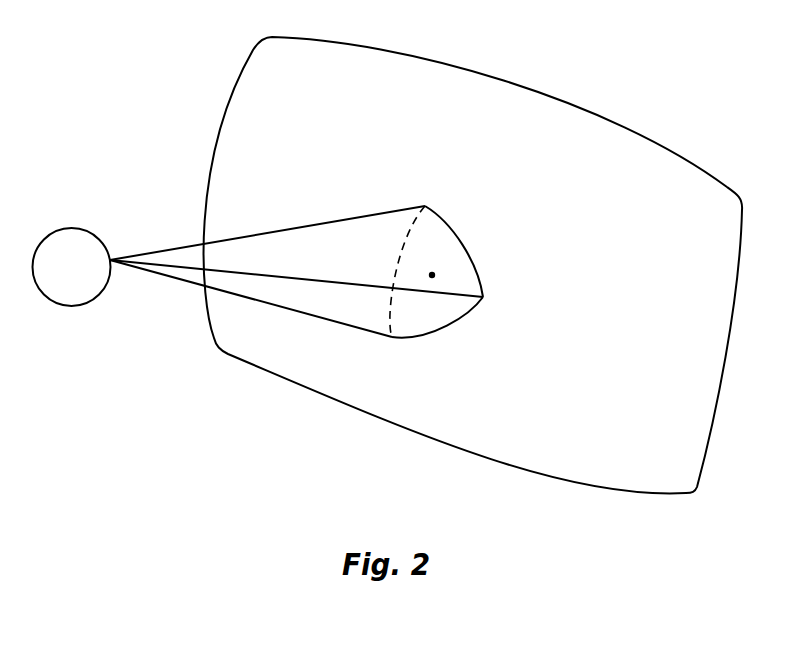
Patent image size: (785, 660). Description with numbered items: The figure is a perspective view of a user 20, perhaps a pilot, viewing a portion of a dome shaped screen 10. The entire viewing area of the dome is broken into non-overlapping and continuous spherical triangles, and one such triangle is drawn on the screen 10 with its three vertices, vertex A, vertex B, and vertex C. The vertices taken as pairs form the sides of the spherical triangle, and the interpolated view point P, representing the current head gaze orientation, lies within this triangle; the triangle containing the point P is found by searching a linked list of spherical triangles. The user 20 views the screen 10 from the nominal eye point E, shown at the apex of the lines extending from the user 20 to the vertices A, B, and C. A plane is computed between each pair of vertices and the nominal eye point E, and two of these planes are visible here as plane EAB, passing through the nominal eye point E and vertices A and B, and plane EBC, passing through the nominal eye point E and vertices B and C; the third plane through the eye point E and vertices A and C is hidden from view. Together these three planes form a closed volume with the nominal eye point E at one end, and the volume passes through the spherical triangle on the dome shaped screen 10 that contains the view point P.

The dome shaped screen 10 is at (641, 458).
The user 20 is at (75, 307).
The nominal eye point E is at (110, 256).
The vertex A is at (425, 206).
The vertex B is at (483, 297).
The vertex C is at (392, 338).
The interpolated view point P is at (435, 273).
The plane EAB is at (313, 247).
The plane EBC is at (327, 305).